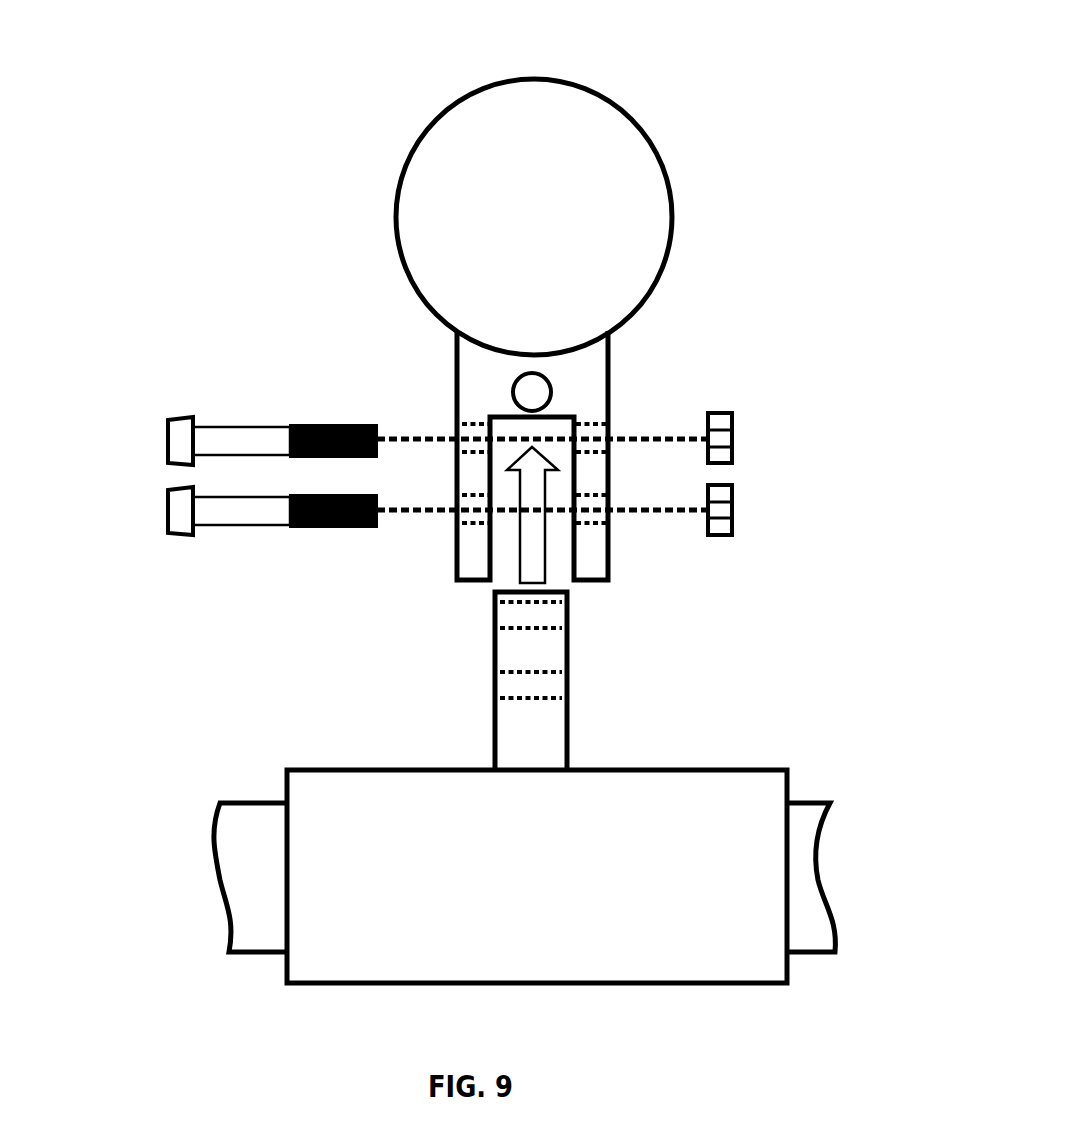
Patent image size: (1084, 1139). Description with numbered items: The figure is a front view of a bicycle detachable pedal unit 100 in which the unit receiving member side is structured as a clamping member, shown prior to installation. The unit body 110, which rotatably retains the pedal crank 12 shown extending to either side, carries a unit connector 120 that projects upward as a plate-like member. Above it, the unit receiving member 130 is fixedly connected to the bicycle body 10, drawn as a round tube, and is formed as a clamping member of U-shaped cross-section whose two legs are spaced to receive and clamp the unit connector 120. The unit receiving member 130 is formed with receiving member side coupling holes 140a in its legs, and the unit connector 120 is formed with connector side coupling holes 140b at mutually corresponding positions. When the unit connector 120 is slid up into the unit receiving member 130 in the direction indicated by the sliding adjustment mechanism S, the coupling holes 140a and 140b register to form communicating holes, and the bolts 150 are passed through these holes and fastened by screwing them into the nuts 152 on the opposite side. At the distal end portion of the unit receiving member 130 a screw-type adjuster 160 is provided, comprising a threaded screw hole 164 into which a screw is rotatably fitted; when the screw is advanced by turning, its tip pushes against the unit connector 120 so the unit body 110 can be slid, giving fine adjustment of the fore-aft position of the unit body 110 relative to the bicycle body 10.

The bicycle body 10 is at (450, 160).
The pedal crank 12 is at (233, 848).
The bicycle detachable pedal unit 100 is at (402, 333).
The unit body 110 is at (735, 895).
The unit connector 120 is at (513, 722).
The unit receiving member 130 is at (578, 365).
The receiving member side coupling holes 140a is at (465, 437).
The connector side coupling holes 140b is at (571, 617).
The bolts 150 is at (177, 445).
The nuts 152 is at (732, 443).
The screw-type adjuster 160 is at (635, 212).
The threaded screw hole 164 is at (537, 390).
The sliding adjustment mechanism S is at (447, 628).